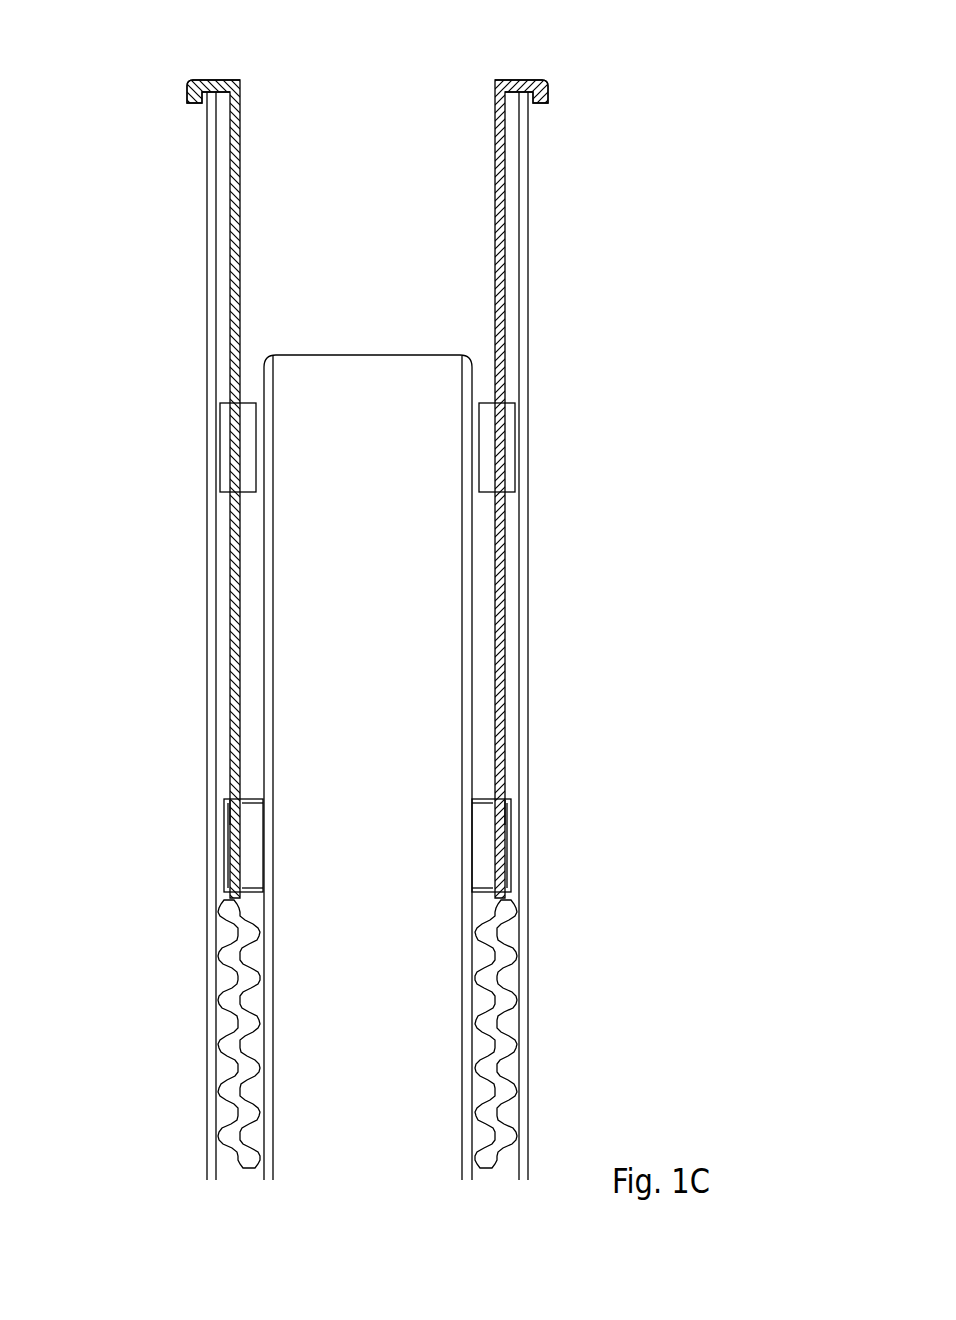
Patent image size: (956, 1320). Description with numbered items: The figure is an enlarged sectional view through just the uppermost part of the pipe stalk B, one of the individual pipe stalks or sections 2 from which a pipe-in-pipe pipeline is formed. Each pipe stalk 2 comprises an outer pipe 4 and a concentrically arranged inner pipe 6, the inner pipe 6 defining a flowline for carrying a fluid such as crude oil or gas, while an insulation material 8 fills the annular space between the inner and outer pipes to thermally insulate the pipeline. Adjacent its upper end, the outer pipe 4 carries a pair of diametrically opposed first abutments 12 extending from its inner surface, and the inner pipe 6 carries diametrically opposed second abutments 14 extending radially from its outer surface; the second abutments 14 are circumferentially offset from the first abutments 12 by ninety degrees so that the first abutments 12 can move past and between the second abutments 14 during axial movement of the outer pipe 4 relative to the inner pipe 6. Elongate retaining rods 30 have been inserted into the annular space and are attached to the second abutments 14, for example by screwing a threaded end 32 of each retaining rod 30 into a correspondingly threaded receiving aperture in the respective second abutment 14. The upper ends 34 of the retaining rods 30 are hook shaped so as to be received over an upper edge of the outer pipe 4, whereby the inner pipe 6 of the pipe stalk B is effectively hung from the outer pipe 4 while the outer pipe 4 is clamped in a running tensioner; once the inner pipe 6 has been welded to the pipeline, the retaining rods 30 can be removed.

The pipe stalk 2 is at (178, 567).
The outer pipe 4 is at (528, 632).
The inner pipe 6 is at (472, 545).
The insulation material 8 is at (508, 1027).
The first abutment 12 is at (517, 447).
The second abutment 14 is at (511, 847).
The retaining rod 30 is at (507, 262).
The threaded end 32 is at (504, 812).
The upper end 34 is at (515, 80).
The pipe stalk B is at (147, 1039).